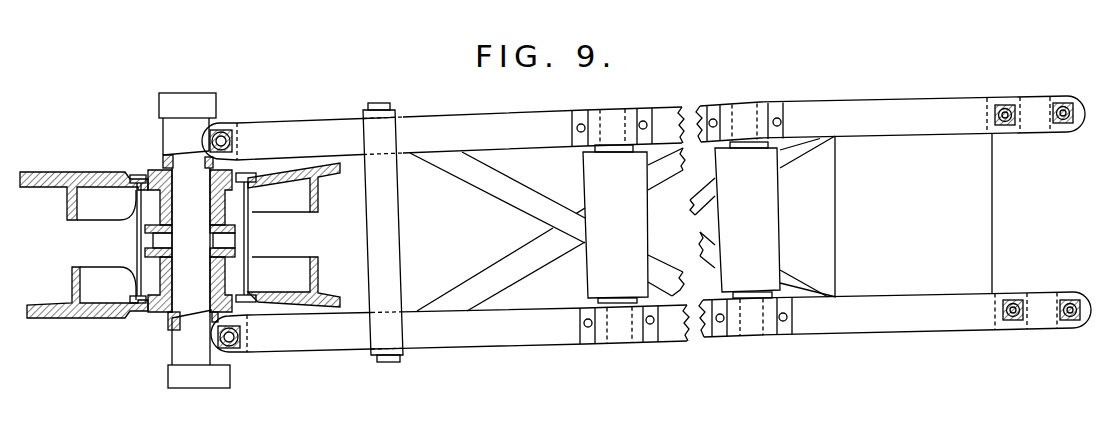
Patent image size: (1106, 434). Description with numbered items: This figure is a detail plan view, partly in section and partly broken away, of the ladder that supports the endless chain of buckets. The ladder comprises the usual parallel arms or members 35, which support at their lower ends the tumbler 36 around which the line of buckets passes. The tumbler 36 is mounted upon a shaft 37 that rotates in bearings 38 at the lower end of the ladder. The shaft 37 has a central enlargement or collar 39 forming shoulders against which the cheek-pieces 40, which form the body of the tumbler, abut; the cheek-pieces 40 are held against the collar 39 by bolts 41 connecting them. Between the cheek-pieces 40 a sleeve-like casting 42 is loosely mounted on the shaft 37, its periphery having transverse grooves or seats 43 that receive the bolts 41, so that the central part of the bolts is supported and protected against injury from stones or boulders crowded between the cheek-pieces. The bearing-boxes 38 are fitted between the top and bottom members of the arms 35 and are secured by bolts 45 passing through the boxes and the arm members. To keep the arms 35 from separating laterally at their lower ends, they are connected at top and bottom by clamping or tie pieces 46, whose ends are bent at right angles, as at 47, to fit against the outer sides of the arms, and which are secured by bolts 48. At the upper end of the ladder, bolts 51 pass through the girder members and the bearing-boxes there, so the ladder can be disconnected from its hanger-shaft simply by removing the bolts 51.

The parallel arms or members 35 is at (540, 113).
The tumbler 36 is at (84, 236).
The shaft 37 is at (170, 325).
The bearings 38 is at (167, 138).
The central enlargement or collar 39 is at (187, 227).
The cheek-pieces 40 is at (70, 178).
The bolts 41 is at (133, 244).
The sleeve-like casting 42 is at (216, 254).
The transverse grooves or seats 43 is at (250, 247).
The bolts 45 is at (228, 128).
The clamping or tie pieces 46 is at (398, 223).
The bent ends 47 is at (397, 112).
The bolts 48 is at (386, 103).
The bolts 51 is at (1063, 123).